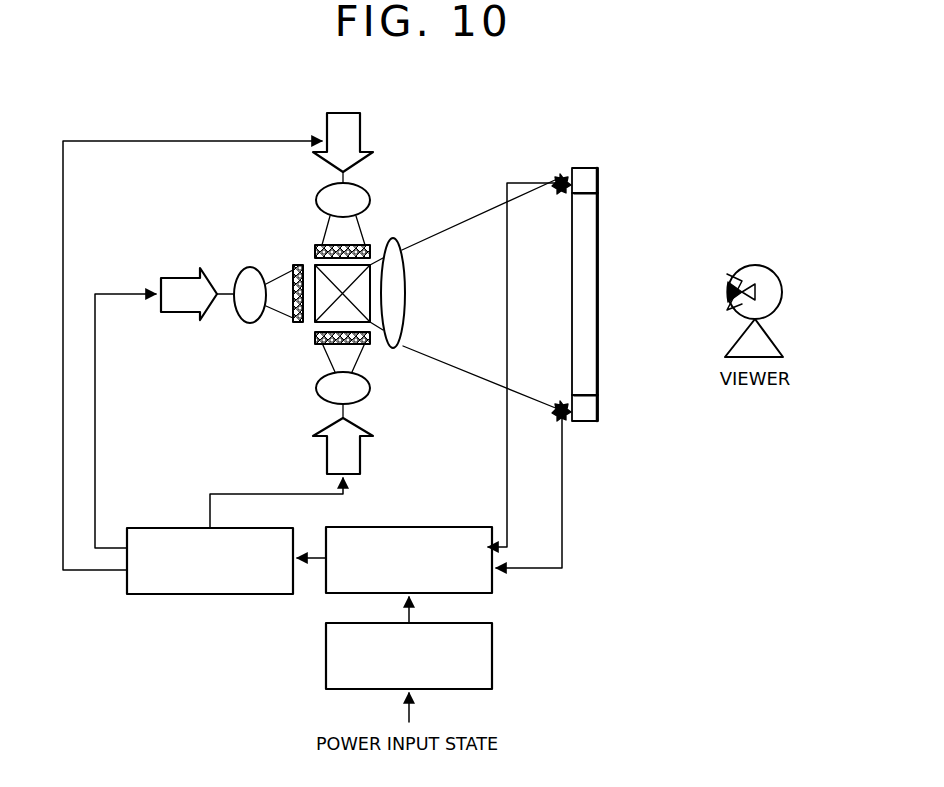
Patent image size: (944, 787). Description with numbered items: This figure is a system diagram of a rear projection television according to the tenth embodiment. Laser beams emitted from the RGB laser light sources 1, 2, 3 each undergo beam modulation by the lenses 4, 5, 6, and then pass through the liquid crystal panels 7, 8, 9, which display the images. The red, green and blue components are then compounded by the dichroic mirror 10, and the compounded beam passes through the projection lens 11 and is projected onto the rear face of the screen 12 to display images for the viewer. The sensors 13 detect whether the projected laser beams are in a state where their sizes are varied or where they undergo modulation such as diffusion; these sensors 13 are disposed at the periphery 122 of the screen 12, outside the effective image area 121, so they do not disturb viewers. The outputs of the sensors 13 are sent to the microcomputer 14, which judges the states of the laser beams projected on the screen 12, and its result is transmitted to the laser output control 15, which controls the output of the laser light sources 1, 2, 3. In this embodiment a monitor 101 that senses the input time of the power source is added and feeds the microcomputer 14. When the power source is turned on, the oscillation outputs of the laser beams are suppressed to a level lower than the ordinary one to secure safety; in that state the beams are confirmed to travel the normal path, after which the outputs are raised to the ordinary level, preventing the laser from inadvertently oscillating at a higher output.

The RGB laser light source 1 is at (186, 280).
The RGB laser light source 2 is at (363, 136).
The RGB laser light source 3 is at (362, 450).
The lens 4 is at (248, 267).
The lens 5 is at (355, 185).
The lens 6 is at (362, 395).
The liquid crystal panel 7 is at (297, 265).
The liquid crystal panel 8 is at (372, 245).
The liquid crystal panel 9 is at (372, 342).
The dichroic mirror 10 is at (318, 319).
The projection lens 11 is at (406, 290).
The screen 12 is at (582, 424).
The sensors 13 is at (558, 175).
The microcomputer 14 is at (455, 527).
The laser output control 15 is at (171, 528).
The monitor 101 is at (493, 652).
The effective image area 121 is at (610, 193).
The periphery 122 is at (610, 396).